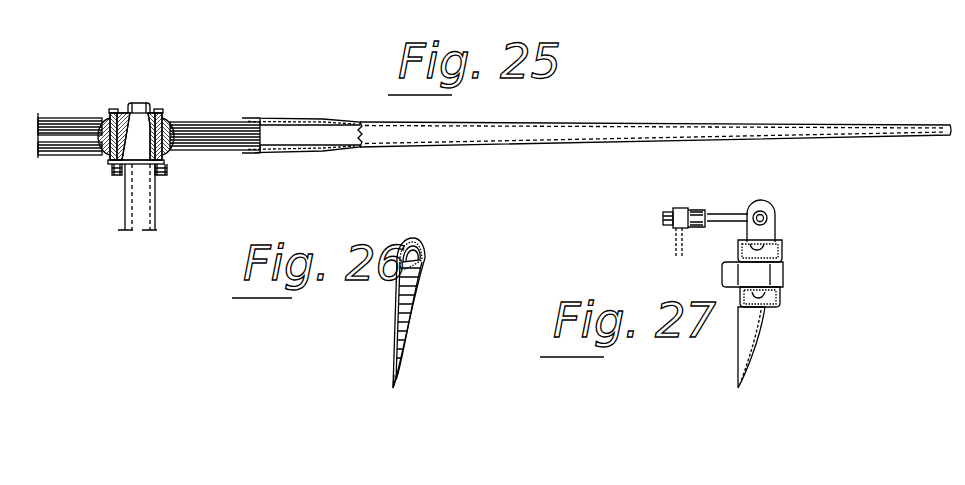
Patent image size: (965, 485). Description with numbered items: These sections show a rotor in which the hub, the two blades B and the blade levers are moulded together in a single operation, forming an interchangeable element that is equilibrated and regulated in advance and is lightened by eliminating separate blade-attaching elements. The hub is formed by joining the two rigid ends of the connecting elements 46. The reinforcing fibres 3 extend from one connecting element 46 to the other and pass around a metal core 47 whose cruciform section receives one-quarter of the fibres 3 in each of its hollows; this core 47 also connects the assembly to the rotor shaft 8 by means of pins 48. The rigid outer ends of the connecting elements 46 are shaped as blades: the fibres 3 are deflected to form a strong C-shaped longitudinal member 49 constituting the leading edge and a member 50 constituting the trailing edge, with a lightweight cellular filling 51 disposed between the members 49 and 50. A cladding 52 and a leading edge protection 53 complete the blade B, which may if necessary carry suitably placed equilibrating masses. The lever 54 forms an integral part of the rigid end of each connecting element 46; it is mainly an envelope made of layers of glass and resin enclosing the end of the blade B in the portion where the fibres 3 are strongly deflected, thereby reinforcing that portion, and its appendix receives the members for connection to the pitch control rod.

In FIG. 25, the reinforcing fibres 3 is at (222, 130).
In FIG. 25, the rotor shaft 8 is at (138, 216).
In FIG. 25, the connecting elements 46 is at (70, 135).
In FIG. 25, the metal core 47 is at (153, 113).
In FIG. 27, the metal core 47 is at (768, 250).
In FIG. 25, the pins 48 is at (156, 164).
In FIG. 26, the C-shaped longitudinal member 49 is at (420, 253).
In FIG. 26, the trailing edge member 50 is at (397, 365).
In FIG. 26, the lightweight cellular filling 51 is at (405, 305).
In FIG. 26, the cladding 52 is at (405, 347).
In FIG. 26, the leading edge protection 53 is at (413, 238).
In FIG. 27, the lever 54 is at (777, 223).
In FIG. 25, the blade B is at (643, 119).
In FIG. 26, the blade B is at (428, 282).
In FIG. 27, the blade B is at (765, 338).